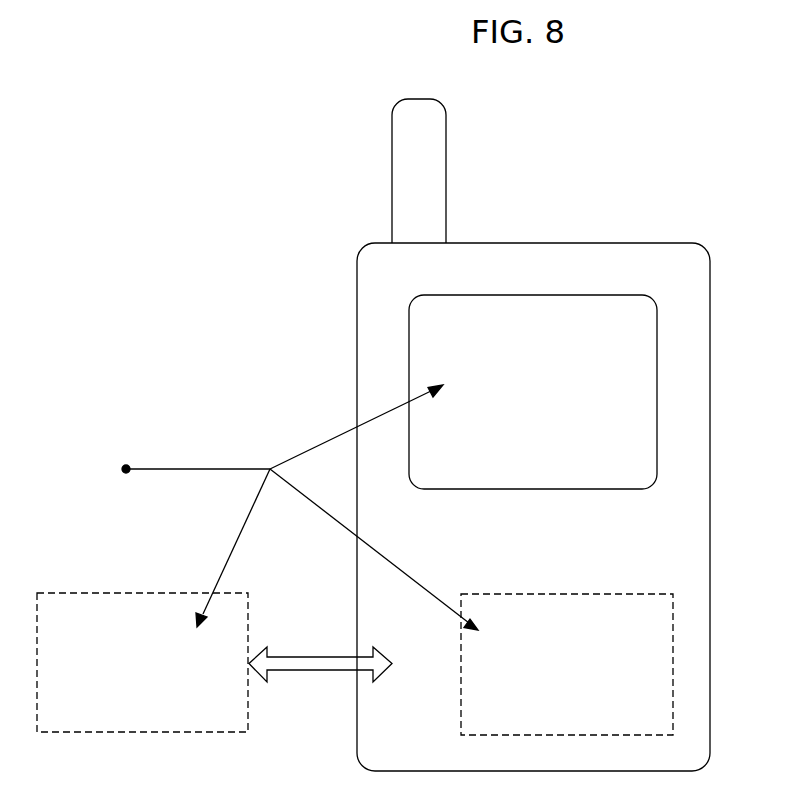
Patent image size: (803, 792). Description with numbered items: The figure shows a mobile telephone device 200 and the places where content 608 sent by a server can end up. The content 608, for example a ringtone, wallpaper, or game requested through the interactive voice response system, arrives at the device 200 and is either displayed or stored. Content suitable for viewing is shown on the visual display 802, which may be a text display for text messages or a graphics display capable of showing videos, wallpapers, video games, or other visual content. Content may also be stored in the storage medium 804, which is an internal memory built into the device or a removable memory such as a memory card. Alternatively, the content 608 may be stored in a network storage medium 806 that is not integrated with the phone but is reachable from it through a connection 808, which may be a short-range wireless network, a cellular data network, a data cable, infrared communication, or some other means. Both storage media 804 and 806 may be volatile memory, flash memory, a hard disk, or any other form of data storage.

The device 200 is at (533, 435).
The content 608 is at (286, 507).
The visual display 802 is at (533, 392).
The storage medium 804 is at (567, 664).
The network storage medium 806 is at (142, 662).
The connection 808 is at (320, 669).